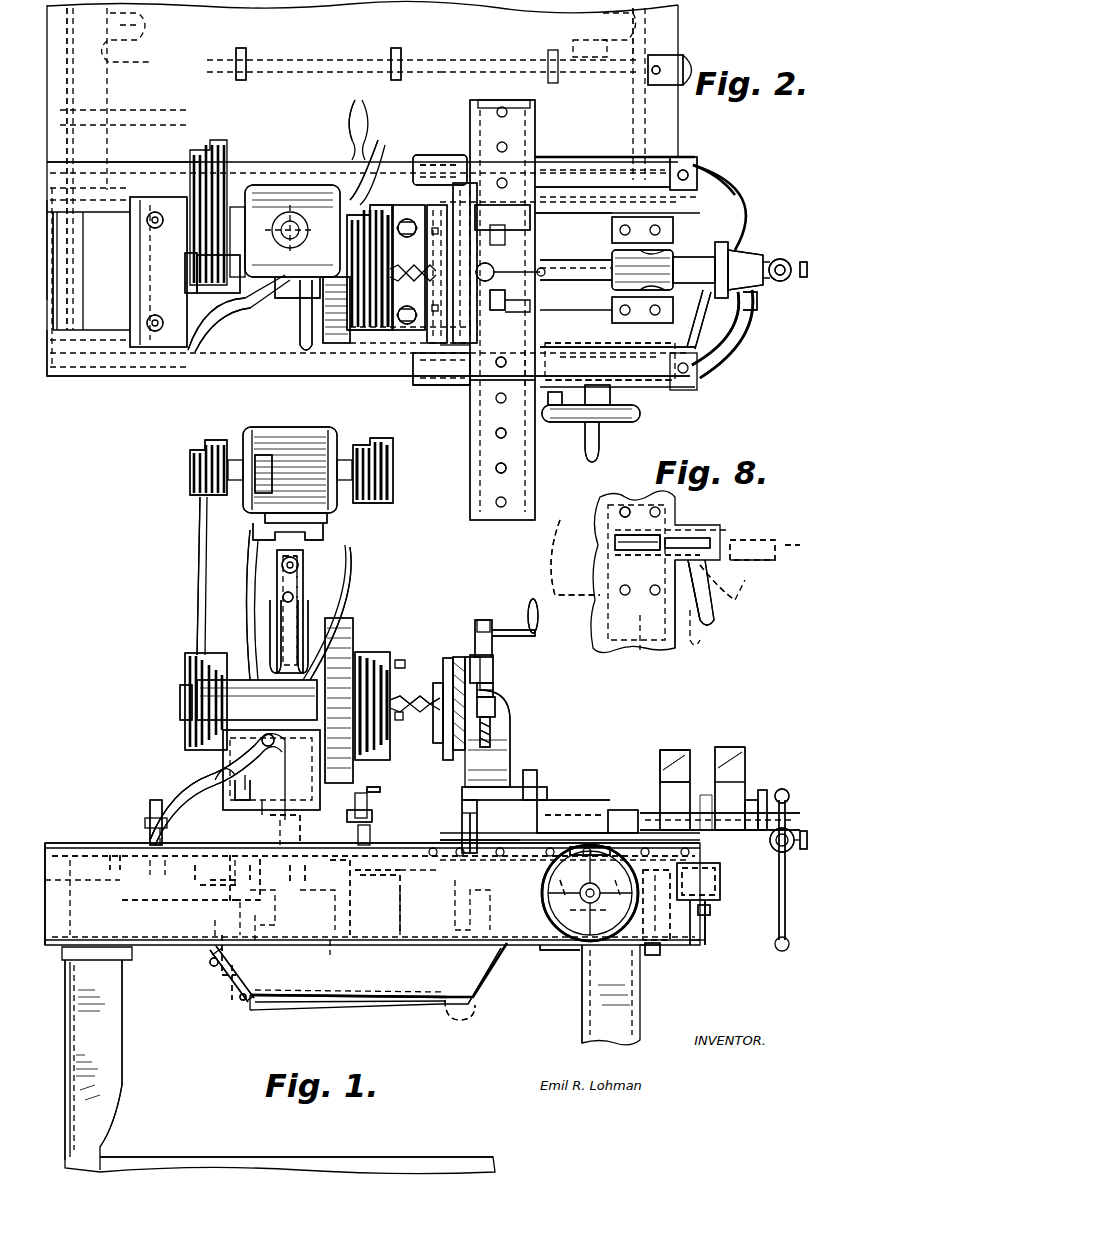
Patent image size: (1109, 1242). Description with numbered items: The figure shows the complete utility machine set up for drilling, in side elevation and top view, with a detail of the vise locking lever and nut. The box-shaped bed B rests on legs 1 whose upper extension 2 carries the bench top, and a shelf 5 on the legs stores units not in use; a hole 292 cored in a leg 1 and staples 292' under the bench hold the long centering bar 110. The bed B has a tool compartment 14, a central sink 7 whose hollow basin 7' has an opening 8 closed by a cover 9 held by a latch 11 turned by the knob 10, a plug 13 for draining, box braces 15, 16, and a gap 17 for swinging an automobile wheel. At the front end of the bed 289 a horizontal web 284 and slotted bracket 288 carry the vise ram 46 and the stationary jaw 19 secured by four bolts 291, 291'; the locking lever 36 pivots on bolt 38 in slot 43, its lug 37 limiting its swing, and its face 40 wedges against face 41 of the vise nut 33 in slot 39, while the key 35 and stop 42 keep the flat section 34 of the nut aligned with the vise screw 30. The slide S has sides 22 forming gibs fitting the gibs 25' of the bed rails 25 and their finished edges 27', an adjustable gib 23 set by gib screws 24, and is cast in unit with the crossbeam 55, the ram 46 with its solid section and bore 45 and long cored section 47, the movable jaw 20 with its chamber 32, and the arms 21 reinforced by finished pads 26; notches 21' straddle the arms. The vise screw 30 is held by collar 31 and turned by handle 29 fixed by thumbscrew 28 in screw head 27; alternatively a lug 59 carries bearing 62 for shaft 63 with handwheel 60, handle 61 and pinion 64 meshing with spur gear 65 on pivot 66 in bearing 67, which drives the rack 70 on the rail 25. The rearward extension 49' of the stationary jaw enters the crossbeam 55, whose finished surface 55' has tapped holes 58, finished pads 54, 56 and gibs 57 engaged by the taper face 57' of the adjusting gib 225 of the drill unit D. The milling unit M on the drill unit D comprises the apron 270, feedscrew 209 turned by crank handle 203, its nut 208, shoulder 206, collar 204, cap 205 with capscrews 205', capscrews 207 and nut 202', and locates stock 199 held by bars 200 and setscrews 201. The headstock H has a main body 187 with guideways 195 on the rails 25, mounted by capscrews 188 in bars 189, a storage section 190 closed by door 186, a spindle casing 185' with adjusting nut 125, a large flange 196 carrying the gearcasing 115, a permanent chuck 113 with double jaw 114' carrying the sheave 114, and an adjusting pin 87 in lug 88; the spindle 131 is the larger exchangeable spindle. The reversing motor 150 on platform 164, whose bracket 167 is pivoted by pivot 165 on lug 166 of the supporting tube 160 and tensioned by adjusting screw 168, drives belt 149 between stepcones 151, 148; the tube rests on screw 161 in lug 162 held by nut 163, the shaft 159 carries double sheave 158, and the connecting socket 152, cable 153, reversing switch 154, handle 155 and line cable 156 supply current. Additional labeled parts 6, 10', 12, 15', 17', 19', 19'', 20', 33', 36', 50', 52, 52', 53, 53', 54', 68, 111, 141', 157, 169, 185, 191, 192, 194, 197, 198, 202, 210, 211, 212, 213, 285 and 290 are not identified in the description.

In FIG. 2, the legs 1 is at (120, 70).
In FIG. 1, the legs 1 is at (110, 1053).
In FIG. 2, the upper extension 2 is at (112, 20).
In FIG. 1, the shelf 5 is at (165, 1157).
In FIG. 1, the bracket 6 is at (540, 950).
In FIG. 1, the sink 7 is at (488, 976).
In FIG. 1, the hollow basin 7' is at (460, 1011).
In FIG. 1, the opening 8 is at (243, 1002).
In FIG. 1, the cover 9 is at (228, 985).
In FIG. 1, the knob 10 is at (218, 974).
In FIG. 2, the strut 10' is at (397, 268).
In FIG. 1, the strut 10' is at (367, 917).
In FIG. 1, the latch 11 is at (240, 940).
In FIG. 1, the pin 12 is at (250, 980).
In FIG. 1, the plug 13 is at (252, 1008).
In FIG. 2, the tool compartment 14 is at (100, 215).
In FIG. 1, the tool compartment 14 is at (75, 845).
In FIG. 1, the box brace 15 is at (253, 879).
In FIG. 1, the bracket 15' is at (354, 923).
In FIG. 1, the box brace 16 is at (445, 910).
In FIG. 2, the gap 17 is at (368, 392).
In FIG. 1, the gap 17 is at (423, 892).
In FIG. 2, the bolt 17' is at (435, 136).
In FIG. 1, the bolt 17' is at (320, 895).
In FIG. 2, the stationary jaw 19 is at (642, 230).
In FIG. 1, the stationary jaw 19 is at (662, 766).
In FIG. 1, the block 19' is at (686, 806).
In FIG. 1, the block face 19'' is at (682, 740).
In FIG. 1, the movable jaw 20 is at (745, 781).
In FIG. 1, the block face 20' is at (718, 748).
In FIG. 2, the arms 21 is at (731, 279).
In FIG. 1, the notches 21' is at (761, 794).
In FIG. 2, the sides 22 is at (672, 158).
In FIG. 2, the adjustable gib 23 is at (455, 386).
In FIG. 2, the gib screws 24 is at (425, 386).
In FIG. 2, the bed rails 25 is at (123, 265).
In FIG. 1, the bed rails 25 is at (372, 821).
In FIG. 2, the gibs 25' is at (149, 201).
In FIG. 1, the gibs 25' is at (373, 866).
In FIG. 2, the finished pads 26 is at (758, 298).
In FIG. 1, the finished pads 26 is at (765, 795).
In FIG. 2, the screw head 27 is at (790, 290).
In FIG. 1, the screw head 27 is at (792, 828).
In FIG. 2, the finished edges 27' is at (83, 277).
In FIG. 2, the thumbscrew 28 is at (804, 260).
In FIG. 1, the thumbscrew 28 is at (803, 850).
In FIG. 2, the handle 29 is at (783, 258).
In FIG. 1, the handle 29 is at (778, 935).
In FIG. 2, the vise screw 30 is at (575, 262).
In FIG. 1, the vise screw 30 is at (510, 878).
In FIG. 2, the collar 31 is at (750, 255).
In FIG. 1, the collar 31 is at (722, 870).
In FIG. 2, the cored out section 32 is at (730, 245).
In FIG. 1, the cored out section 32 is at (718, 878).
In FIG. 8, the vise nut 33 is at (612, 554).
In FIG. 1, the vise nut 33 is at (626, 807).
In FIG. 8, the bar end 33' is at (785, 568).
In FIG. 8, the flat section 34 is at (695, 535).
In FIG. 8, the key 35 is at (775, 540).
In FIG. 2, the locking lever 36 is at (721, 328).
In FIG. 8, the locking lever 36 is at (699, 603).
In FIG. 1, the locking lever 36 is at (716, 922).
In FIG. 8, the arm 36' is at (740, 591).
In FIG. 2, the lug 37 is at (693, 319).
In FIG. 8, the lug 37 is at (705, 570).
In FIG. 1, the lug 37 is at (712, 890).
In FIG. 8, the bolt 38 is at (715, 545).
In FIG. 1, the bolt 38 is at (701, 919).
In FIG. 8, the slot 39 is at (665, 550).
In FIG. 8, the face 40 is at (685, 535).
In FIG. 8, the face 41 is at (790, 548).
In FIG. 8, the stop 42 is at (635, 540).
In FIG. 1, the slot 43 is at (704, 945).
In FIG. 2, the solid section 45 is at (705, 258).
In FIG. 1, the solid section 45 is at (720, 817).
In FIG. 2, the vise ram 46 is at (610, 285).
In FIG. 1, the vise ram 46 is at (590, 815).
In FIG. 2, the cored out section 47 is at (570, 305).
In FIG. 1, the cored out section 47 is at (580, 820).
In FIG. 2, the rearward extension 49' is at (573, 200).
In FIG. 1, the rearward extension 49' is at (544, 804).
In FIG. 1, the base 50' is at (456, 819).
In FIG. 1, the block face 52 is at (675, 715).
In FIG. 1, the block face 52' is at (646, 744).
In FIG. 1, the block face 53 is at (735, 744).
In FIG. 1, the block face 53' is at (765, 742).
In FIG. 2, the finished pads 54 is at (704, 276).
In FIG. 2, the bolt 54' is at (705, 277).
In FIG. 2, the crossbeam 55 is at (502, 302).
In FIG. 2, the finished surface 55' is at (529, 305).
In FIG. 1, the finished pads 56 is at (565, 812).
In FIG. 2, the gibs 57 is at (474, 475).
In FIG. 1, the taper face 57' is at (455, 825).
In FIG. 2, the tapped holes 58 is at (503, 438).
In FIG. 2, the lug 59 is at (638, 415).
In FIG. 1, the lug 59 is at (565, 855).
In FIG. 2, the handwheel 60 is at (582, 432).
In FIG. 1, the handwheel 60 is at (580, 940).
In FIG. 2, the handle 61 is at (600, 452).
In FIG. 2, the bearing 62 is at (610, 396).
In FIG. 2, the shaft 63 is at (610, 372).
In FIG. 2, the pinion 64 is at (610, 350).
In FIG. 2, the spur gear 65 is at (545, 360).
In FIG. 2, the pivot 66 is at (548, 400).
In FIG. 2, the bearing 67 is at (612, 305).
In FIG. 2, the stem 68 is at (595, 455).
In FIG. 1, the rack 70 is at (480, 900).
In FIG. 1, the adjusting pin 87 is at (369, 782).
In FIG. 1, the lug 88 is at (360, 807).
In FIG. 2, the long centering bar 110 is at (420, 60).
In FIG. 2, the block 111 is at (684, 66).
In FIG. 1, the permanent chuck 113 is at (398, 722).
In FIG. 1, the sheave 114 is at (381, 715).
In FIG. 1, the double jaw 114' is at (415, 709).
In FIG. 1, the gearcasing 115 is at (355, 640).
In FIG. 2, the adjusting nut 125 is at (190, 270).
In FIG. 1, the adjusting nut 125 is at (185, 715).
In FIG. 1, the spindle 131 is at (308, 1005).
In FIG. 2, the cable 141' is at (356, 113).
In FIG. 1, the stepcone 148 is at (187, 668).
In FIG. 1, the driving belt 149 is at (197, 612).
In FIG. 2, the reversing motor 150 is at (262, 185).
In FIG. 1, the reversing motor 150 is at (303, 428).
In FIG. 1, the stepcone 151 is at (215, 452).
In FIG. 1, the connecting socket 152 is at (272, 465).
In FIG. 1, the cable 153 is at (250, 595).
In FIG. 2, the reversing switch 154 is at (298, 300).
In FIG. 1, the reversing switch 154 is at (270, 635).
In FIG. 2, the handle 155 is at (298, 318).
In FIG. 1, the handle 155 is at (276, 608).
In FIG. 2, the line cable 156 is at (370, 160).
In FIG. 1, the line cable 156 is at (345, 578).
In FIG. 1, the pulley 157 is at (358, 450).
In FIG. 1, the double sheave 158 is at (378, 500).
In FIG. 1, the shaft 159 is at (394, 470).
In FIG. 2, the supporting tube 160 is at (284, 185).
In FIG. 1, the supporting tube 160 is at (300, 595).
In FIG. 1, the screw 161 is at (270, 824).
In FIG. 1, the lug 162 is at (285, 865).
In FIG. 1, the nut 163 is at (303, 829).
In FIG. 1, the adjustable platform 164 is at (328, 523).
In FIG. 1, the pivot 165 is at (325, 536).
In FIG. 1, the lug 166 is at (305, 549).
In FIG. 1, the bracket 167 is at (277, 555).
In FIG. 1, the adjusting screw 168 is at (303, 575).
In FIG. 1, the pivot 169 is at (298, 566).
In FIG. 2, the arm 185 is at (175, 324).
In FIG. 1, the arm 185 is at (207, 800).
In FIG. 2, the spindle casing 185' is at (218, 274).
In FIG. 1, the spindle casing 185' is at (257, 684).
In FIG. 2, the door 186 is at (245, 345).
In FIG. 1, the door 186 is at (248, 745).
In FIG. 1, the main body 187 is at (160, 785).
In FIG. 2, the capscrews 188 is at (155, 212).
In FIG. 1, the capscrews 188 is at (152, 800).
In FIG. 1, the bars 189 is at (150, 888).
In FIG. 1, the storage section 190 is at (178, 838).
In FIG. 1, the pin 191 is at (274, 738).
In FIG. 1, the bracket 192 is at (280, 765).
In FIG. 2, the pulley 194 is at (358, 205).
In FIG. 1, the guideways 195 is at (205, 860).
In FIG. 2, the large flange 196 is at (335, 345).
In FIG. 1, the large flange 196 is at (360, 660).
In FIG. 2, the pulley 197 is at (380, 328).
In FIG. 1, the pulley 197 is at (390, 670).
In FIG. 2, the bolt 198 is at (407, 306).
In FIG. 1, the bolt 198 is at (392, 670).
In FIG. 2, the stock 199 is at (407, 237).
In FIG. 1, the stock 199 is at (437, 683).
In FIG. 2, the bars 200 is at (437, 207).
In FIG. 1, the bars 200 is at (447, 657).
In FIG. 2, the setscrews 201 is at (458, 263).
In FIG. 1, the setscrews 201 is at (463, 694).
In FIG. 2, the screw 202 is at (505, 300).
In FIG. 1, the screw 202 is at (493, 628).
In FIG. 1, the nut 202' is at (504, 605).
In FIG. 1, the crank handle 203 is at (540, 614).
In FIG. 1, the collar 204 is at (495, 663).
In FIG. 1, the cap 205 is at (512, 676).
In FIG. 1, the capscrews 205' is at (529, 674).
In FIG. 2, the shoulder 206 is at (490, 262).
In FIG. 1, the shoulder 206 is at (497, 690).
In FIG. 1, the capscrews 207 is at (497, 708).
In FIG. 1, the nut 208 is at (493, 725).
In FIG. 1, the feedscrew 209 is at (492, 742).
In FIG. 2, the block 210 is at (450, 155).
In FIG. 1, the block 210 is at (460, 795).
In FIG. 2, the block 211 is at (502, 217).
In FIG. 2, the slot 212 is at (522, 370).
In FIG. 2, the hole 213 is at (487, 368).
In FIG. 1, the adjusting gib 225 is at (540, 780).
In FIG. 1, the apron 270 is at (528, 768).
In FIG. 2, the horizontal web 284 is at (700, 215).
In FIG. 8, the horizontal web 284 is at (640, 650).
In FIG. 1, the horizontal web 284 is at (650, 905).
In FIG. 8, the housing 285 is at (560, 555).
In FIG. 1, the housing 285 is at (595, 955).
In FIG. 8, the slotted bracket 288 is at (700, 618).
In FIG. 1, the slotted bracket 288 is at (712, 935).
In FIG. 1, the front end of the bed 289 is at (660, 950).
In FIG. 8, the rod 290 is at (755, 510).
In FIG. 1, the bolts 291 is at (664, 964).
In FIG. 1, the bolts 291' is at (572, 902).
In FIG. 2, the hole 292 is at (697, 46).
In FIG. 2, the staples 292' is at (396, 52).
In FIG. 2, the bed B is at (40, 370).
In FIG. 1, the bed B is at (165, 940).
In FIG. 1, the drill unit D is at (560, 800).
In FIG. 2, the headstock H is at (150, 270).
In FIG. 1, the headstock H is at (145, 815).
In FIG. 1, the milling unit M is at (468, 655).
In FIG. 2, the slide S is at (565, 160).
In FIG. 1, the slide S is at (380, 815).